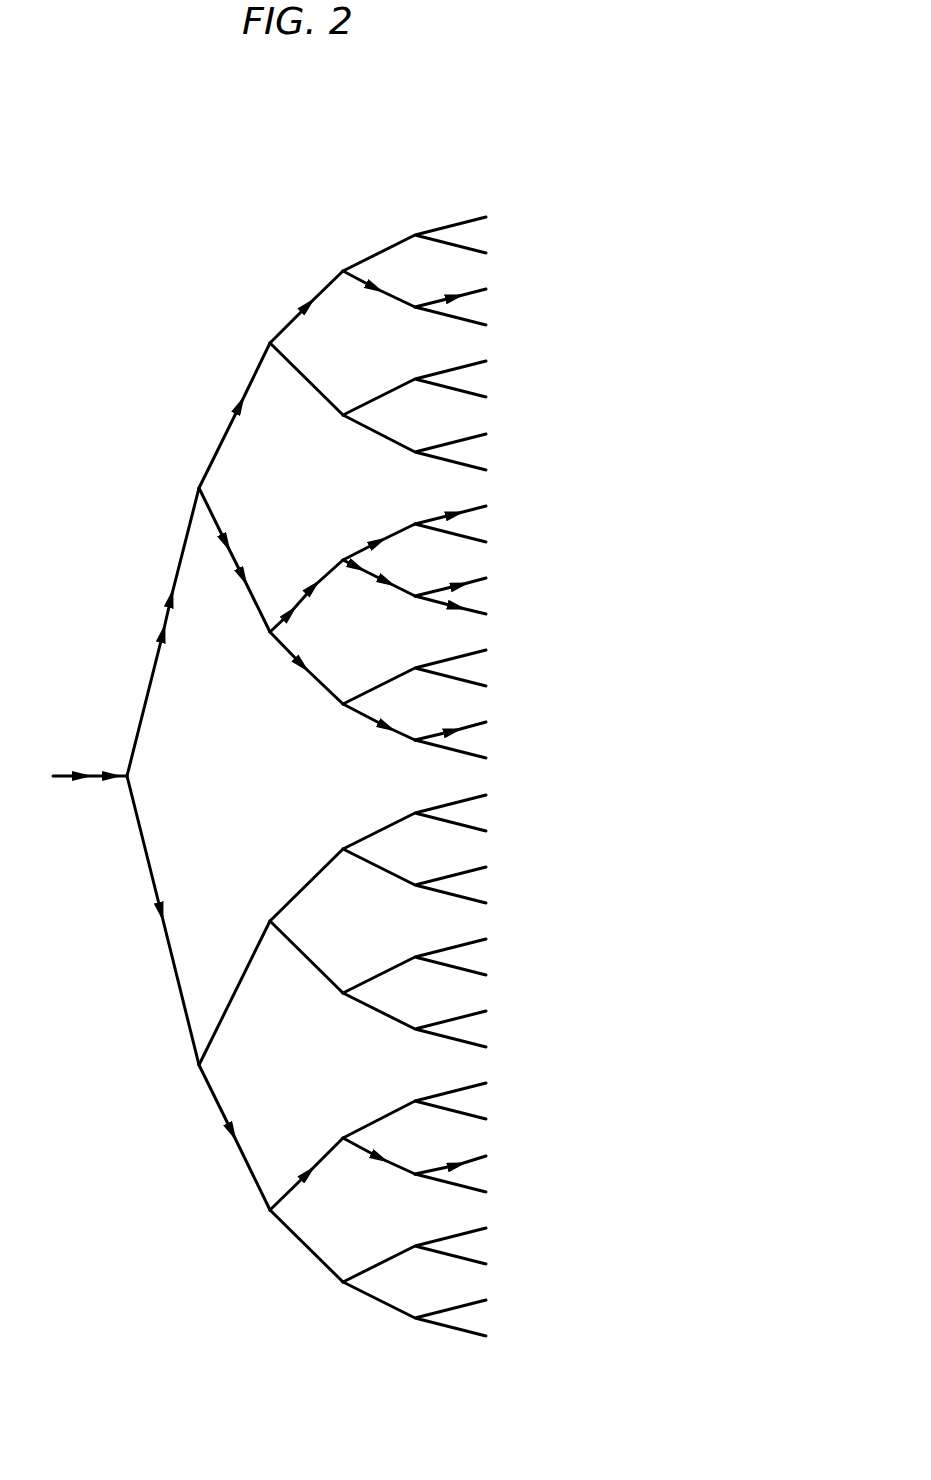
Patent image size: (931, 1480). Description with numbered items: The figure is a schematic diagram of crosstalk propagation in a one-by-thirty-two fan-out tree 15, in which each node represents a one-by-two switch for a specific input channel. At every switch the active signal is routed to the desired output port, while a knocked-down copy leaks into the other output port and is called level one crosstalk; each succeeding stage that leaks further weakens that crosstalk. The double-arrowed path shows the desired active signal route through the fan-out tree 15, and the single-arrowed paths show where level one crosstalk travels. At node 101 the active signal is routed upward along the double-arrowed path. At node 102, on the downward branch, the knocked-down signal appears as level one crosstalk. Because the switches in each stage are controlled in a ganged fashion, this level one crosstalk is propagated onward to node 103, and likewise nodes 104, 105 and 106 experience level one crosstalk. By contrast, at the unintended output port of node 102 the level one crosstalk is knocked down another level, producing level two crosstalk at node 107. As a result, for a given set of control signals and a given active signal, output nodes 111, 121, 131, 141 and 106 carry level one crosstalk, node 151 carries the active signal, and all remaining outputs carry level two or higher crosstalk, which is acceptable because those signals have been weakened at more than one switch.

The fan-out tree 15 is at (506, 145).
The node 101 is at (121, 781).
The node 102 is at (197, 1068).
The node 103 is at (268, 1215).
The node 104 is at (343, 1136).
The node 105 is at (412, 1178).
The node 106 is at (486, 1157).
The node 107 is at (272, 927).
The node 111 is at (486, 289).
The node 121 is at (486, 506).
The node 131 is at (486, 722).
The node 141 is at (486, 614).
The node 151 is at (486, 578).